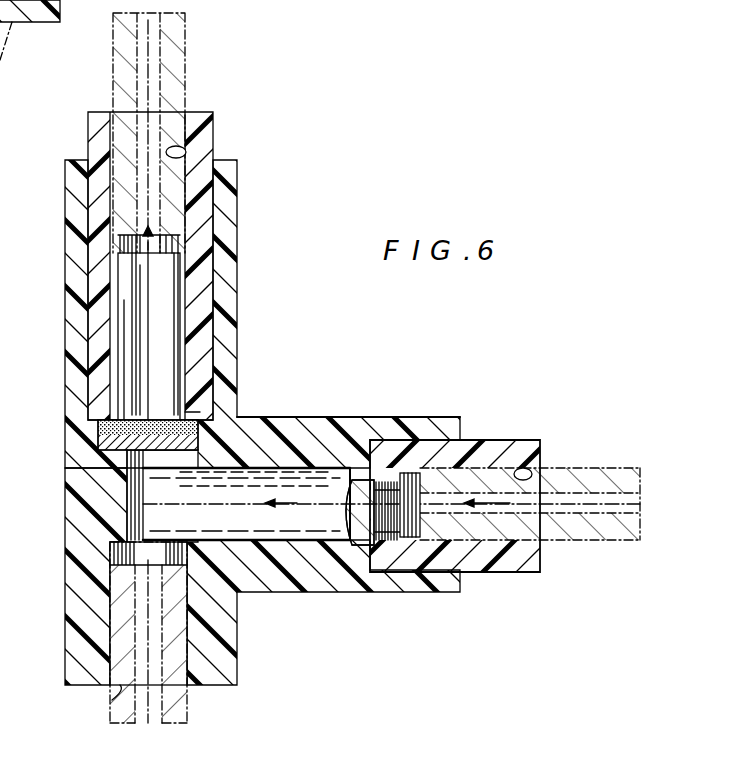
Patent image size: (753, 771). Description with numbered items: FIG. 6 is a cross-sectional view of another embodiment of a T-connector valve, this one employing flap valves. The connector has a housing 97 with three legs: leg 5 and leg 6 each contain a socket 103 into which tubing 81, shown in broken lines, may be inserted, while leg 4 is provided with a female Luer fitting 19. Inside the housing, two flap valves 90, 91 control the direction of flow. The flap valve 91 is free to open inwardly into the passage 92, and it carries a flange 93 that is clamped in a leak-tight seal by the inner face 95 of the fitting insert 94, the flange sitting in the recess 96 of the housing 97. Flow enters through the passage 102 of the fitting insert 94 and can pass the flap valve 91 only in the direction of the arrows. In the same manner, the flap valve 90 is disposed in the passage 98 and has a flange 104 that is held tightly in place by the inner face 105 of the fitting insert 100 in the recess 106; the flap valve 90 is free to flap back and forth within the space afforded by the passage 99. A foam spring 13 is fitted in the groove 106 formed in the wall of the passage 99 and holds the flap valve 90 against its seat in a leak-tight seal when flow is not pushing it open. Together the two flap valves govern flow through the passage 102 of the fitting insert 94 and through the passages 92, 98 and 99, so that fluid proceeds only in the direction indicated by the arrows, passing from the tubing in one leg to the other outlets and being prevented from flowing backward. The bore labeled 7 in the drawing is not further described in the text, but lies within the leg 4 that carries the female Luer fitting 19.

The leg 4 is at (65, 634).
The leg 5 is at (65, 244).
The leg 6 is at (411, 416).
The outlet bore 7 is at (148, 632).
The foam spring 13 is at (124, 418).
The female Luer fitting 19 is at (112, 700).
The tubing 81 is at (188, 48).
The flap valve 90 is at (152, 420).
The flap valve 91 is at (350, 500).
The passage 92 is at (246, 504).
The flange 93 is at (360, 548).
The fitting insert 94 is at (507, 440).
The inner face 95 is at (388, 545).
The recess 96 is at (350, 545).
The housing 97 is at (304, 388).
The passage 98 is at (136, 460).
The passage 99 is at (149, 327).
The fitting insert 100 is at (200, 213).
The passage 102 is at (410, 540).
The socket 103 is at (180, 153).
The flange 104 is at (100, 440).
The inner face 105 is at (255, 490).
The recess 106 is at (185, 412).